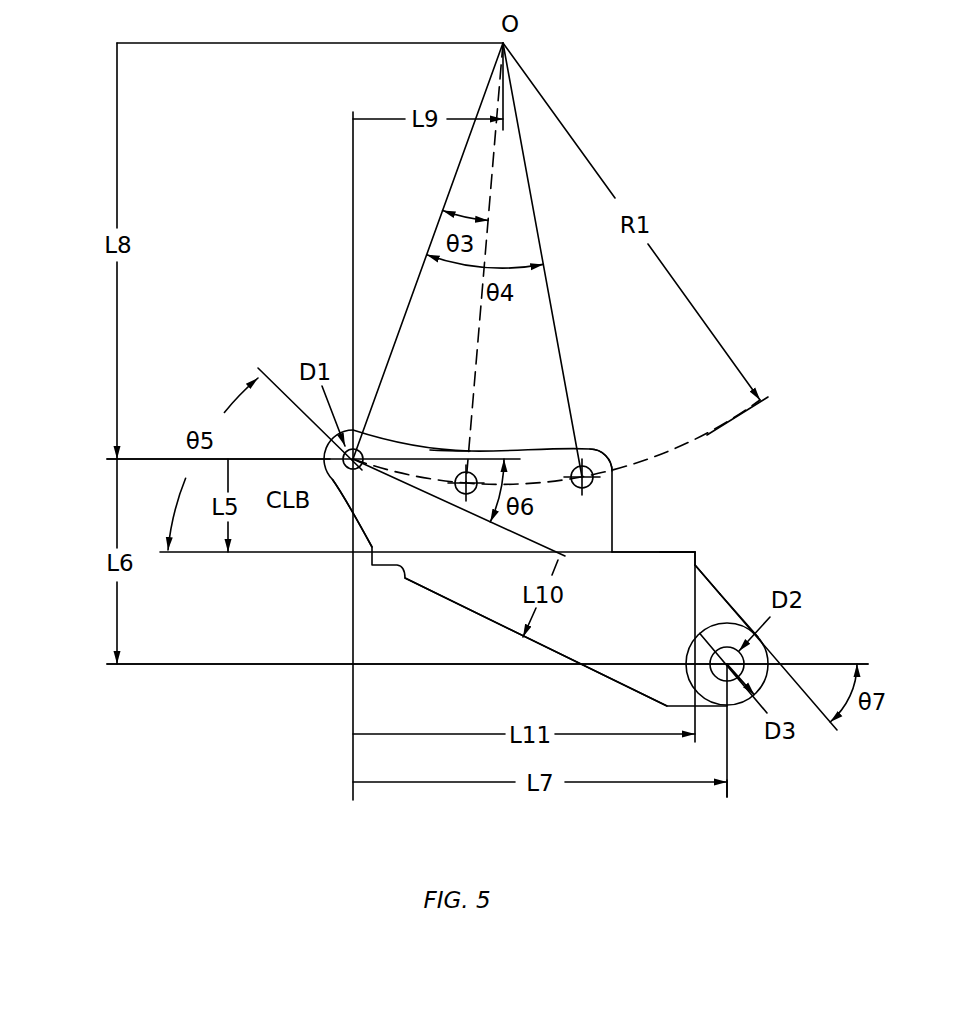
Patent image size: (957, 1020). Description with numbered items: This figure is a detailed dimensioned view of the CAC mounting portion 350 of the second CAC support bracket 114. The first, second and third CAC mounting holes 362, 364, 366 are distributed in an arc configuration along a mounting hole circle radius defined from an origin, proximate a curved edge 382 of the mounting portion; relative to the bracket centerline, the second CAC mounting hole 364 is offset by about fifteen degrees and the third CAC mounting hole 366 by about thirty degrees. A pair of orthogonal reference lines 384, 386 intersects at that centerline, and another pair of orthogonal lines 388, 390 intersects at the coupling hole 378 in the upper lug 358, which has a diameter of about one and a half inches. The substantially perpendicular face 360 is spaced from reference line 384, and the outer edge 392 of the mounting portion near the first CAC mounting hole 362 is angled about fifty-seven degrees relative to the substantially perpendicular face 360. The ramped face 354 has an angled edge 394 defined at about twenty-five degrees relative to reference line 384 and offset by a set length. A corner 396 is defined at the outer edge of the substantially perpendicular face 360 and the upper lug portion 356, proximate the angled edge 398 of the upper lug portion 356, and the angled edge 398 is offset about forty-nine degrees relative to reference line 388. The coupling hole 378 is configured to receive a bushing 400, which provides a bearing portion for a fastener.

The second CAC support bracket 114 is at (772, 266).
The CAC mounting portion 350 is at (600, 446).
The ramped face 354 is at (618, 592).
The upper lug portion 356 is at (718, 607).
The upper lug 358 is at (757, 730).
The substantially perpendicular face 360 is at (667, 550).
The first CAC mounting hole 362 is at (390, 446).
The second CAC mounting hole 364 is at (478, 470).
The third CAC mounting hole 366 is at (584, 465).
The coupling hole 378 is at (745, 662).
The curved edge 382 is at (460, 447).
The reference line 384 is at (147, 459).
The reference line 386 is at (353, 167).
The reference line 388 is at (147, 666).
The reference line 390 is at (727, 797).
The outer edge 392 is at (347, 493).
The angled edge 394 is at (447, 600).
The corner 396 is at (705, 552).
The angled edge 398 is at (707, 610).
The bushing 400 is at (743, 618).